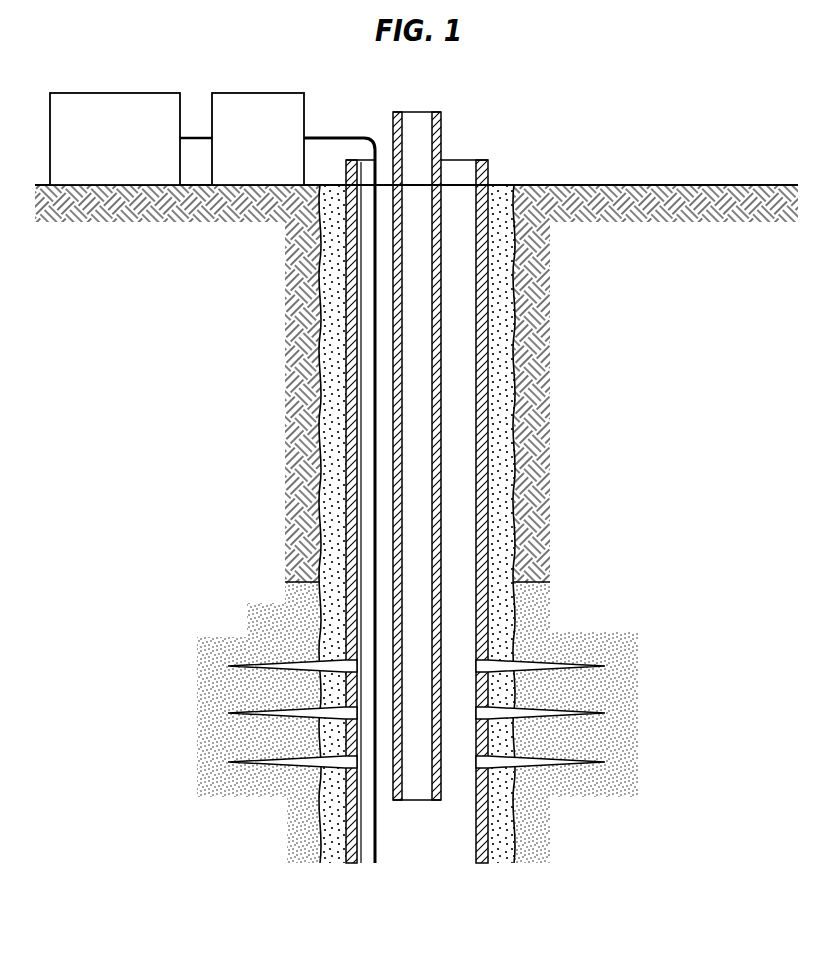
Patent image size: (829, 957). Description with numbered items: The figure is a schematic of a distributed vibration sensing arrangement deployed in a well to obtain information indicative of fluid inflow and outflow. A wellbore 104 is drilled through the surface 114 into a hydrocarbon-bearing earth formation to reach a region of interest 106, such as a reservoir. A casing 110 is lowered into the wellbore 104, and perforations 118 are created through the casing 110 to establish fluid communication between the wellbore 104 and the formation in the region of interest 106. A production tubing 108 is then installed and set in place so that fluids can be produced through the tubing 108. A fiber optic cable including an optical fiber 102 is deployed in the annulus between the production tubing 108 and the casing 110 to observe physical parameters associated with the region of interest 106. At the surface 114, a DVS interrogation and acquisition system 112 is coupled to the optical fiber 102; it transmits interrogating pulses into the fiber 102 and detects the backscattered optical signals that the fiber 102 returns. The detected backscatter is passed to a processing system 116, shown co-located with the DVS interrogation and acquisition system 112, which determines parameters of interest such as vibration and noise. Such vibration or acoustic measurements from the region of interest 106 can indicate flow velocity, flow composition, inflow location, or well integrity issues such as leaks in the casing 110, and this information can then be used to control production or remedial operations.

The optical fiber 102 is at (375, 353).
The wellbore 104 is at (510, 282).
The region of interest 106 is at (298, 642).
The production tubing 108 is at (441, 416).
The casing 110 is at (346, 519).
The DVS interrogation and acquisition system 112 is at (263, 93).
The surface 114 is at (680, 185).
The processing system 116 is at (98, 93).
The perforations 118 is at (230, 762).